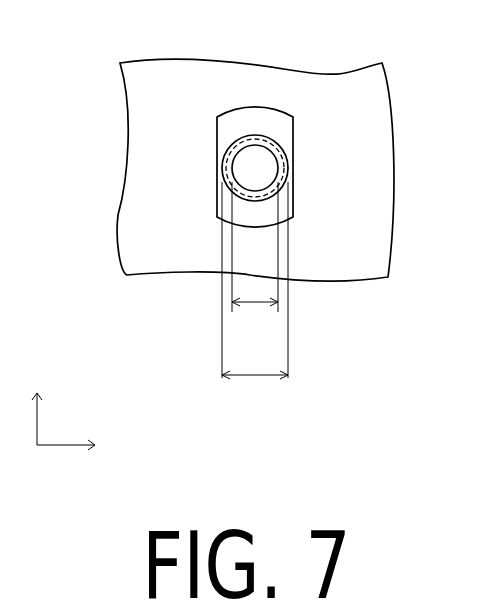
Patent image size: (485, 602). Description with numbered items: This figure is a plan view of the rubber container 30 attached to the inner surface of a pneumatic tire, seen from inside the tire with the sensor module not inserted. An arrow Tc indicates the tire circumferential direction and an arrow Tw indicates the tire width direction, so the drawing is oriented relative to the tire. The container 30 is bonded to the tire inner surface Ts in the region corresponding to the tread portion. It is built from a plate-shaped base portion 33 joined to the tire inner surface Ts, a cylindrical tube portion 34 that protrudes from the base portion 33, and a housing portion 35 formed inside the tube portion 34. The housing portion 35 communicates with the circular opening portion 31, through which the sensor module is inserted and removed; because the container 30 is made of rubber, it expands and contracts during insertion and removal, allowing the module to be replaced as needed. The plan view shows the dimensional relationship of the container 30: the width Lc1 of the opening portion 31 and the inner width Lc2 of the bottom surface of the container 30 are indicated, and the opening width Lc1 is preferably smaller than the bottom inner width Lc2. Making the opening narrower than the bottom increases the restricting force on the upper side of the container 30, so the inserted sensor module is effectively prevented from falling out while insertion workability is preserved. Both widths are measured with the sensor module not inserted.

The container 30 is at (232, 108).
The opening portion 31 is at (230, 157).
The base portion 33 is at (280, 133).
The tube portion 34 is at (288, 150).
The housing portion 35 is at (255, 162).
The tire inner surface Ts is at (155, 112).
The width of the opening portion Lc1 is at (255, 263).
The inner width of the bottom surface Lc2 is at (255, 301).
The tire circumferential direction Tc is at (38, 399).
The tire width direction Tw is at (85, 446).